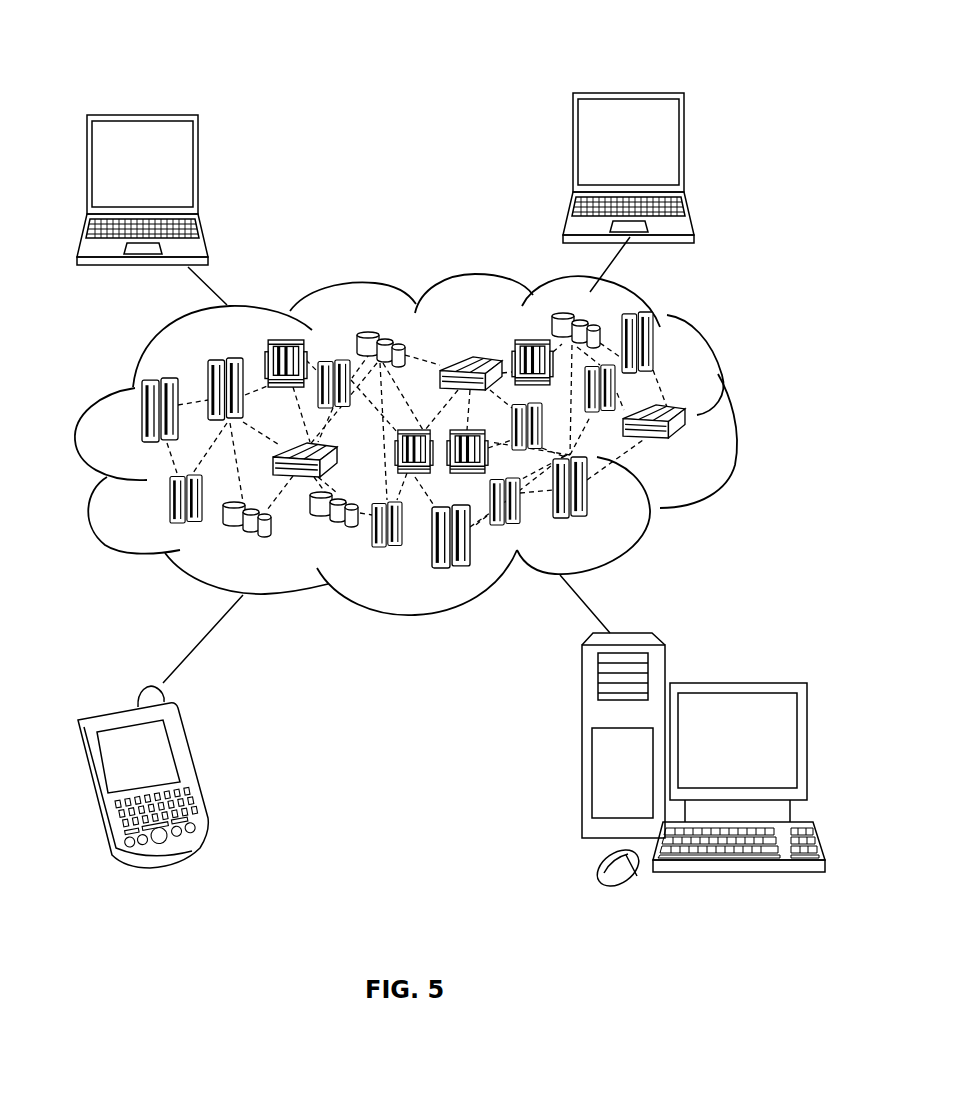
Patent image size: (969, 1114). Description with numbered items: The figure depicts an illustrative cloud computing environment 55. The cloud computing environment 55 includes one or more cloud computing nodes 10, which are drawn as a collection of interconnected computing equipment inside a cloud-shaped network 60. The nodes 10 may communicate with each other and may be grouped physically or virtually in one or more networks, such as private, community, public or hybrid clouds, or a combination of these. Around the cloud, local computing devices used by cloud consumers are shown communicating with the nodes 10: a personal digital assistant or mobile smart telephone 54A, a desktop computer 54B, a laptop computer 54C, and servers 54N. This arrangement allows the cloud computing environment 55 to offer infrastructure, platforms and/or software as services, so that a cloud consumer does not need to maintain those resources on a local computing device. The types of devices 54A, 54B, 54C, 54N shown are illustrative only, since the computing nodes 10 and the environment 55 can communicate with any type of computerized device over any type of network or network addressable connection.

The cloud computing environment 55 is at (437, 64).
The cloud computing nodes 10 is at (689, 451).
The cloud network 60 is at (735, 422).
The personal digital assistant or mobile telephone 54A is at (190, 768).
The desktop computer 54B is at (735, 682).
The laptop computer 54C is at (198, 171).
The servers 54N is at (577, 181).